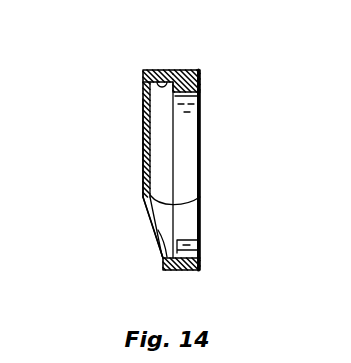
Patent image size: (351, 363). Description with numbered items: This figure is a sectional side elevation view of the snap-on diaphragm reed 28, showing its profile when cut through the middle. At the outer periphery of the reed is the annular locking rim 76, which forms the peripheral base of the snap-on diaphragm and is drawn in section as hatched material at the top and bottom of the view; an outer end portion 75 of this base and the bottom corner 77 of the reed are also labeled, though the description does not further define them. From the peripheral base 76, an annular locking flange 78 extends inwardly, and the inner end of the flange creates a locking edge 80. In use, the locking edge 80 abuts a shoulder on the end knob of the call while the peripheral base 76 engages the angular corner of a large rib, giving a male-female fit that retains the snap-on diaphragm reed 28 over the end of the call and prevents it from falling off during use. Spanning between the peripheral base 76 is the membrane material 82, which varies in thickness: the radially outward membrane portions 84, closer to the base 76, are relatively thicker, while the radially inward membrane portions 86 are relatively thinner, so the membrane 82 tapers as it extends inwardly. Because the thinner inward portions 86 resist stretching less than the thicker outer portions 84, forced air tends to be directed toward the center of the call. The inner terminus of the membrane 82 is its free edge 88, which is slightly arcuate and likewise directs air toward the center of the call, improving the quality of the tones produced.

The snap-on diaphragm reed 28 is at (200, 70).
The end portion 75 is at (170, 71).
The annular locking rim 76 is at (163, 72).
The bottom corner 77 is at (163, 271).
The annular locking flange 78 is at (200, 82).
The locking edge 80 is at (171, 151).
The membrane material 82 is at (143, 140).
The radially outward membrane portions 84 is at (143, 103).
The radially inward membrane portions 86 is at (145, 183).
The free edge 88 is at (200, 200).